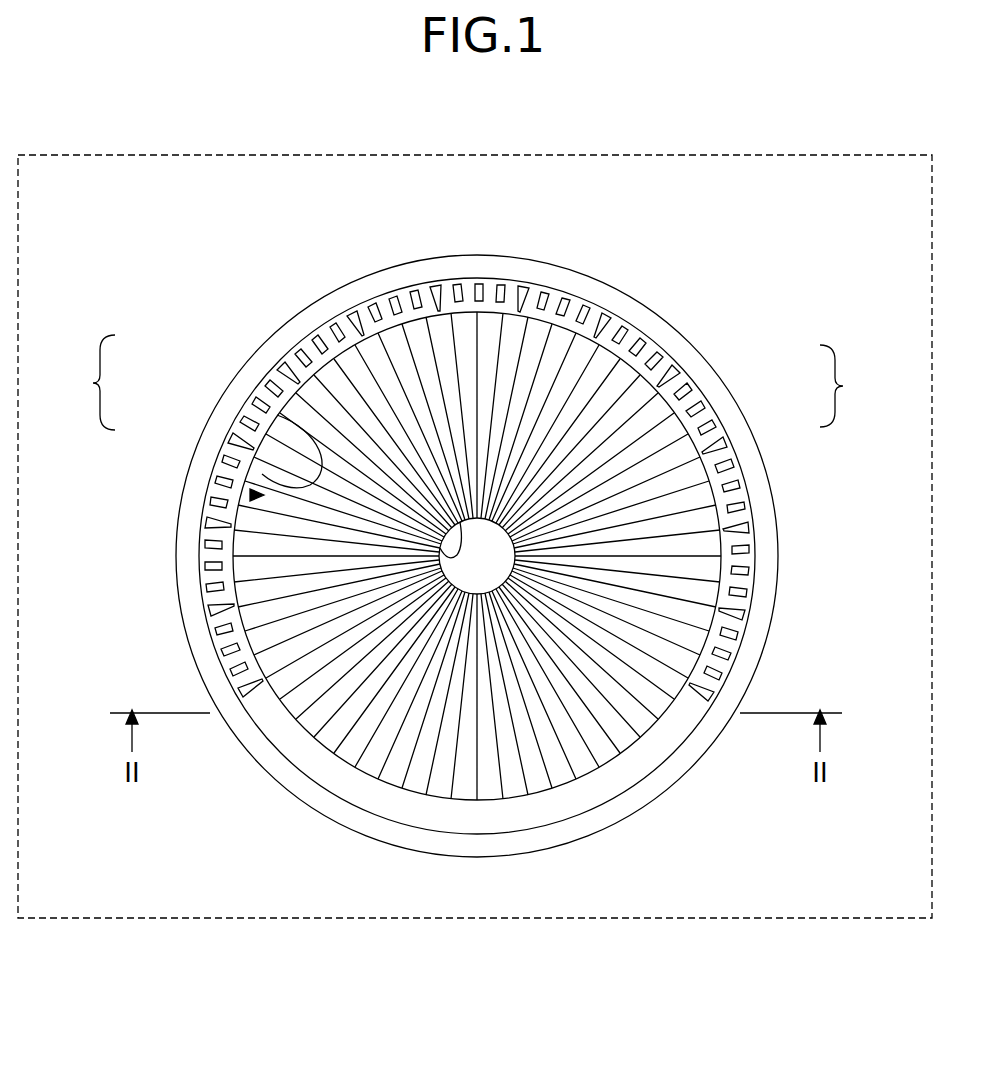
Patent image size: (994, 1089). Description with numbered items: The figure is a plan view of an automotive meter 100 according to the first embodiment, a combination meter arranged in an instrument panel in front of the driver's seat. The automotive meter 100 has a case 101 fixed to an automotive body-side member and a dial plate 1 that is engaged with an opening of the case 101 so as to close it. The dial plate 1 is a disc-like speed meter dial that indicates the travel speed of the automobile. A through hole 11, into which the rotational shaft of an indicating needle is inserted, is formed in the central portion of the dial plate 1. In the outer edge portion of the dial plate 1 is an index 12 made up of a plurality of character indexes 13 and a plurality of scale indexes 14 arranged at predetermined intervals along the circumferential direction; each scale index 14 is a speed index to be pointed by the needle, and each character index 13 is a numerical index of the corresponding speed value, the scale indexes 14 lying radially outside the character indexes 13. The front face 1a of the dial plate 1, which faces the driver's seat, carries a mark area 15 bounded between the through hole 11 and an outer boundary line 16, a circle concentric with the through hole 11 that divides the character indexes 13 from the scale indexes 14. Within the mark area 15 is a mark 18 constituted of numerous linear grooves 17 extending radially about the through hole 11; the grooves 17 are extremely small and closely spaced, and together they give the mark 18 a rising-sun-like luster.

The automotive meter 100 is at (299, 137).
The case 101 is at (845, 142).
The dial plate 1 is at (505, 268).
The front face 1a is at (557, 341).
The through hole 11 is at (440, 548).
The index 12 is at (849, 386).
The character index 13 is at (678, 408).
The scale index 14 is at (723, 447).
The mark area 15 is at (252, 495).
The outer boundary line 16 is at (215, 541).
The groove 17 is at (277, 415).
The mark 18 is at (385, 506).